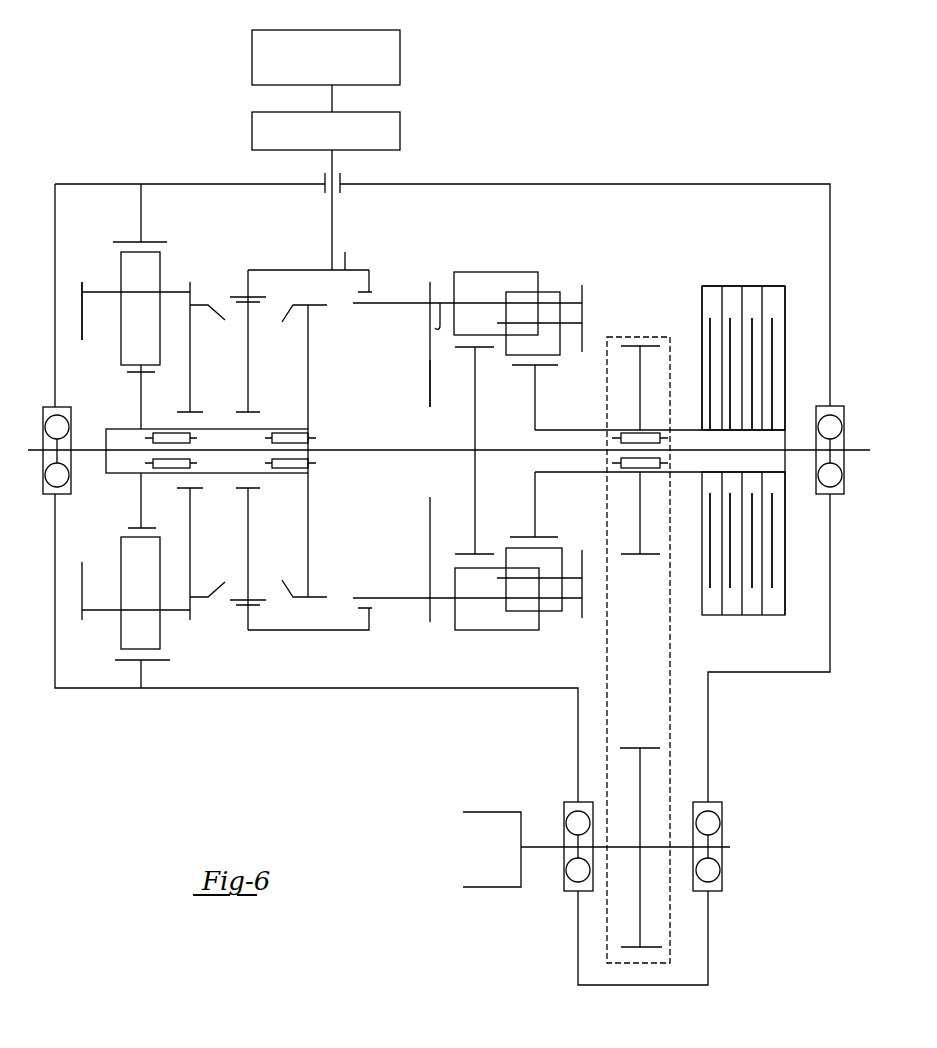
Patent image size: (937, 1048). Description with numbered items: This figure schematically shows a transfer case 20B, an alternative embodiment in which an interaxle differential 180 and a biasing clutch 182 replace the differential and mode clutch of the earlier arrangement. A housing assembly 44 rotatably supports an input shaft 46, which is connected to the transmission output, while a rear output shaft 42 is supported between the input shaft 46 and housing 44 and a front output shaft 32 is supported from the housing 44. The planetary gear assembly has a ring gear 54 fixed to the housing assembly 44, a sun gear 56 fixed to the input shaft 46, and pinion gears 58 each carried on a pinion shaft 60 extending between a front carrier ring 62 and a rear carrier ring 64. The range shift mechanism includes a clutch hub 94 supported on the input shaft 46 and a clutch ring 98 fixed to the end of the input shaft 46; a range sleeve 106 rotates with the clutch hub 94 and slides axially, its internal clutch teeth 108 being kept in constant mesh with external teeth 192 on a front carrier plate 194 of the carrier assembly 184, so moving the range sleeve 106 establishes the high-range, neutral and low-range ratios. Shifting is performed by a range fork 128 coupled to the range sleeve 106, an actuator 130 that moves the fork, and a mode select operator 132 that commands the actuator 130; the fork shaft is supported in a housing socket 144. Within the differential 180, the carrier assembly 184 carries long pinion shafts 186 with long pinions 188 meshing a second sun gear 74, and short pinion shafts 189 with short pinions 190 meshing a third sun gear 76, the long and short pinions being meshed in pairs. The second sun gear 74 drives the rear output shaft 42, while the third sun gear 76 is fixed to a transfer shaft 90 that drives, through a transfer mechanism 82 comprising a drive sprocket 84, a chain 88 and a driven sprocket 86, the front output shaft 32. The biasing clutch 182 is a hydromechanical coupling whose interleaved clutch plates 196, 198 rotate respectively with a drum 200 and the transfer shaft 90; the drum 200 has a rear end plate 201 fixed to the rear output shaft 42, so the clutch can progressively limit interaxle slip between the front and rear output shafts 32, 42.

The transfer case 20B is at (672, 150).
The front output shaft 32 is at (555, 845).
The rear output shaft 42 is at (855, 450).
The housing assembly 44 is at (802, 183).
The input shaft 46 is at (88, 455).
The ring gear 54 is at (141, 218).
The sun gear 56 is at (141, 396).
The pinion gears 58 is at (160, 268).
The pinion shaft 60 is at (98, 292).
The front carrier ring 62 is at (82, 316).
The rear carrier ring 64 is at (218, 340).
The second sun gear 74 is at (475, 383).
The third sun gear 76 is at (535, 398).
The transfer mechanism 82 is at (647, 567).
The drive sprocket 84 is at (658, 390).
The driven sprocket 86 is at (640, 777).
The chain 88 is at (672, 722).
The transfer shaft 90 is at (588, 428).
The clutch hub 94 is at (248, 378).
The clutch ring 98 is at (308, 400).
The range sleeve 106 is at (283, 270).
The internal clutch teeth 108 is at (400, 293).
The range fork 128 is at (332, 217).
The actuator 130 is at (400, 133).
The mode select operator 132 is at (400, 58).
The housing socket 144 is at (690, 430).
The interaxle differential 180 is at (562, 257).
The biasing clutch 182 is at (731, 266).
The carrier assembly 184 is at (584, 319).
The long pinion shafts 186 is at (430, 318).
The long pinions 188 is at (515, 272).
The short pinion shafts 189 is at (570, 306).
The short pinions 190 is at (560, 282).
The external teeth 192 is at (353, 303).
The front carrier plate 194 is at (430, 383).
The clutch plates 196 is at (760, 598).
The clutch plates 198 is at (702, 337).
The drum 200 is at (798, 250).
The rear end plate 201 is at (785, 575).